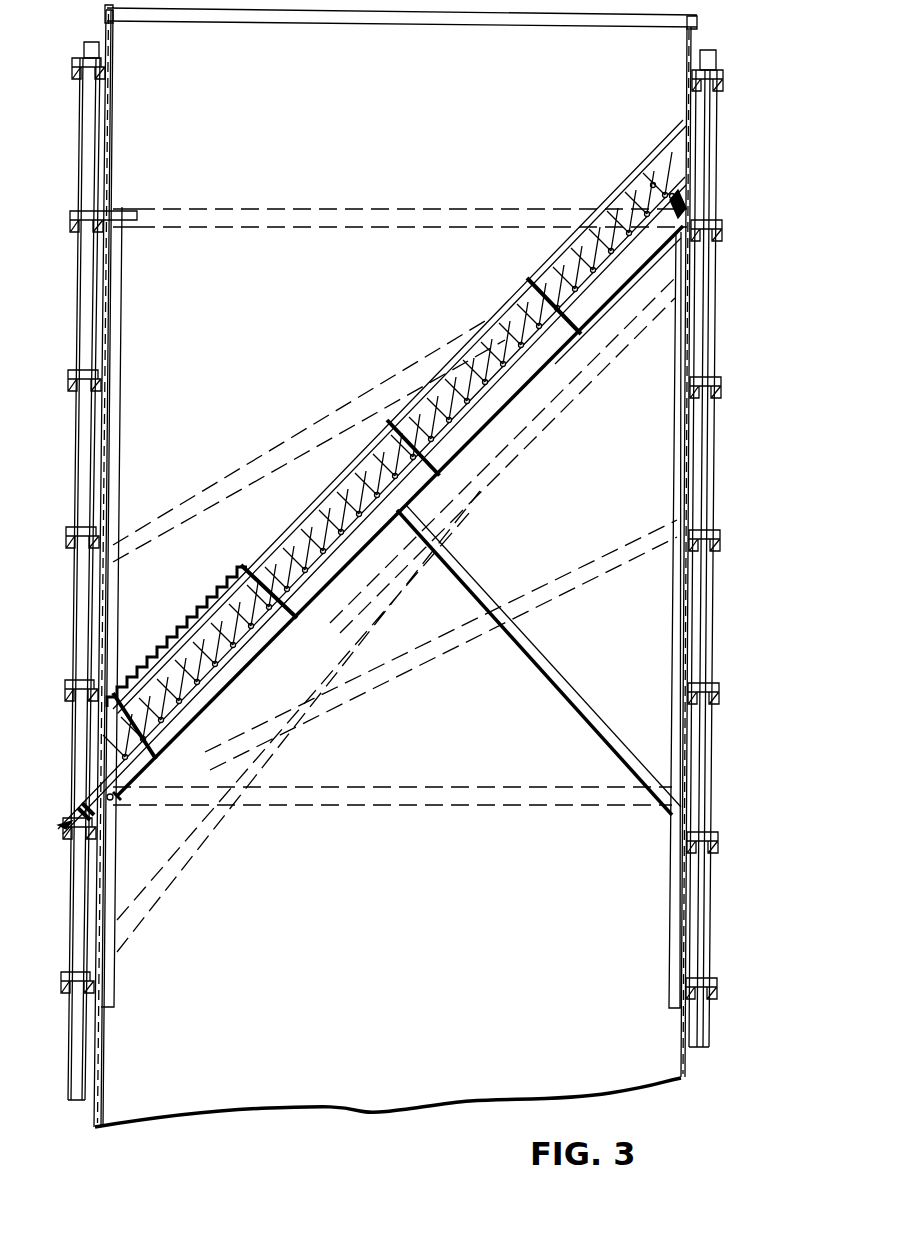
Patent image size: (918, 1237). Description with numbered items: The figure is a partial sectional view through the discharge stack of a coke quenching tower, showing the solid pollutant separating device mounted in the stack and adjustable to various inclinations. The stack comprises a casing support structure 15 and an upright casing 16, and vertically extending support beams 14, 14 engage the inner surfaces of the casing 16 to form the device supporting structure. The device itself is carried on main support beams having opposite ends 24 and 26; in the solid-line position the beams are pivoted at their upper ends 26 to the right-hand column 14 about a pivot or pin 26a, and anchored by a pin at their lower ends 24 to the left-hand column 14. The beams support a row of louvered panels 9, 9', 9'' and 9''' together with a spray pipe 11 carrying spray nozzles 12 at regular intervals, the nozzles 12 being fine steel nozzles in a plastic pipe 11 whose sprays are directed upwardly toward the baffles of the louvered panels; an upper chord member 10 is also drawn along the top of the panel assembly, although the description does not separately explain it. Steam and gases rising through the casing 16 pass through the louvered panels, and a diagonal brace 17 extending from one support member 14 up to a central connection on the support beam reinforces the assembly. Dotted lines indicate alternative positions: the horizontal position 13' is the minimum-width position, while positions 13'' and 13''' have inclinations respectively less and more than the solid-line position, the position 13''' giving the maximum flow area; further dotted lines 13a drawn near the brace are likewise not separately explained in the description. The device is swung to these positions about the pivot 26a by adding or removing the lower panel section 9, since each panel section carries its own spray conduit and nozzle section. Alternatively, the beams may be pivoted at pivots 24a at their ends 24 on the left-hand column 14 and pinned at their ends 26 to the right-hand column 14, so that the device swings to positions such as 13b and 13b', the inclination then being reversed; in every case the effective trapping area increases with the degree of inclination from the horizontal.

The louvered panel 9 is at (200, 660).
The louvered panel 9' is at (334, 520).
The louvered panel 9'' is at (495, 352).
The louvered panel 9''' is at (612, 216).
The upper chord 10 is at (264, 556).
The spray pipe 11 is at (205, 724).
The spray nozzles 12 is at (262, 633).
The horizontal position of support beams 13' is at (400, 187).
The inclined position of support beams 13'' is at (309, 440).
The inclined position of support beams 13''' is at (298, 721).
The brace position (phantom) 13a is at (456, 513).
The pivoted position of support beams 13b is at (392, 814).
The pivoted position of support beams 13b' is at (441, 643).
The support beam 14 is at (110, 310).
The casing support structure 15 is at (83, 163).
The upright casing 16 is at (697, 40).
The diagonal brace 17 is at (553, 688).
The end of support beam 24 is at (140, 788).
The pivot 24a is at (88, 818).
The end of support beam 26 is at (653, 243).
The pivot 26a is at (692, 216).